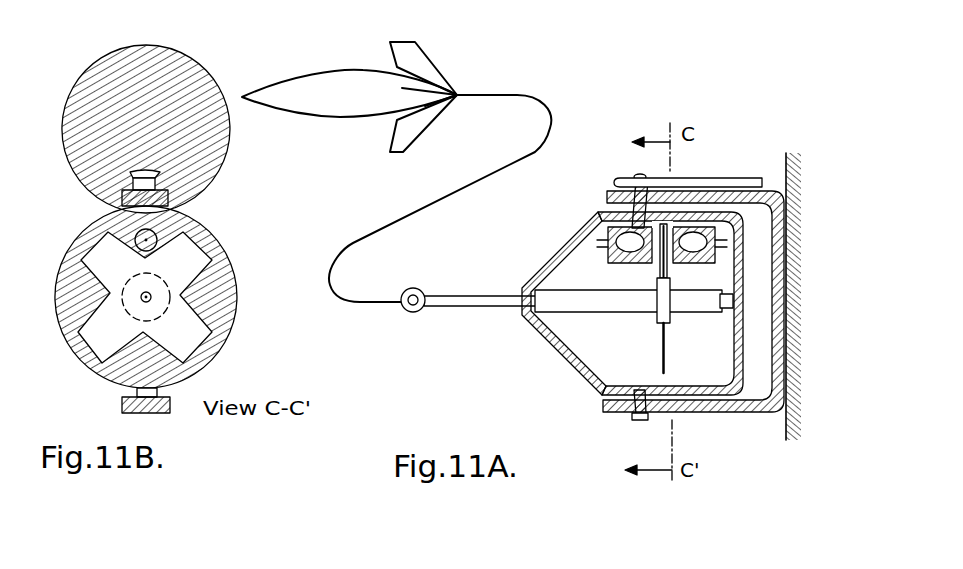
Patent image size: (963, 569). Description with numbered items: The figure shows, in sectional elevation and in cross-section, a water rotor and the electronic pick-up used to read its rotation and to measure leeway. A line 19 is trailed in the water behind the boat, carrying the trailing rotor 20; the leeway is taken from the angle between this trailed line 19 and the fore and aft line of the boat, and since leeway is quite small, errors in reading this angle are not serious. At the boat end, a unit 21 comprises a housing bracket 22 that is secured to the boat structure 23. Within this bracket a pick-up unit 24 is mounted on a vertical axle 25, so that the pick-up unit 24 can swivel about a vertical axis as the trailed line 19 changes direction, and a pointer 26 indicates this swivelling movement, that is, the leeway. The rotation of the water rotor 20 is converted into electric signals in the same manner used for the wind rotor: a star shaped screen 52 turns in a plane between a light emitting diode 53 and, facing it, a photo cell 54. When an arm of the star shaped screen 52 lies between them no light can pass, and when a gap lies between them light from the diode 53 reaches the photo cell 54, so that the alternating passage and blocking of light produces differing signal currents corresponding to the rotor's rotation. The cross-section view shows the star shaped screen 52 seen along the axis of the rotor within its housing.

In FIG. 11A, the line 19 is at (358, 303).
In FIG. 11A, the trailing rotor 20 is at (290, 90).
In FIG. 11A, the unit 21 is at (593, 353).
In FIG. 11A, the housing bracket 22 is at (750, 412).
In FIG. 11A, the boat structure 23 is at (795, 160).
In FIG. 11A, the pick-up unit 24 is at (555, 257).
In FIG. 11A, the vertical axle 25 is at (638, 416).
In FIG. 11A, the pointer 26 is at (695, 180).
In FIG. 11B, the star shaped screen 52 is at (95, 342).
In FIG. 11A, the star shaped screen 52 is at (668, 345).
In FIG. 11A, the light emitting diode 53 is at (624, 258).
In FIG. 11A, the photo cell 54 is at (700, 258).